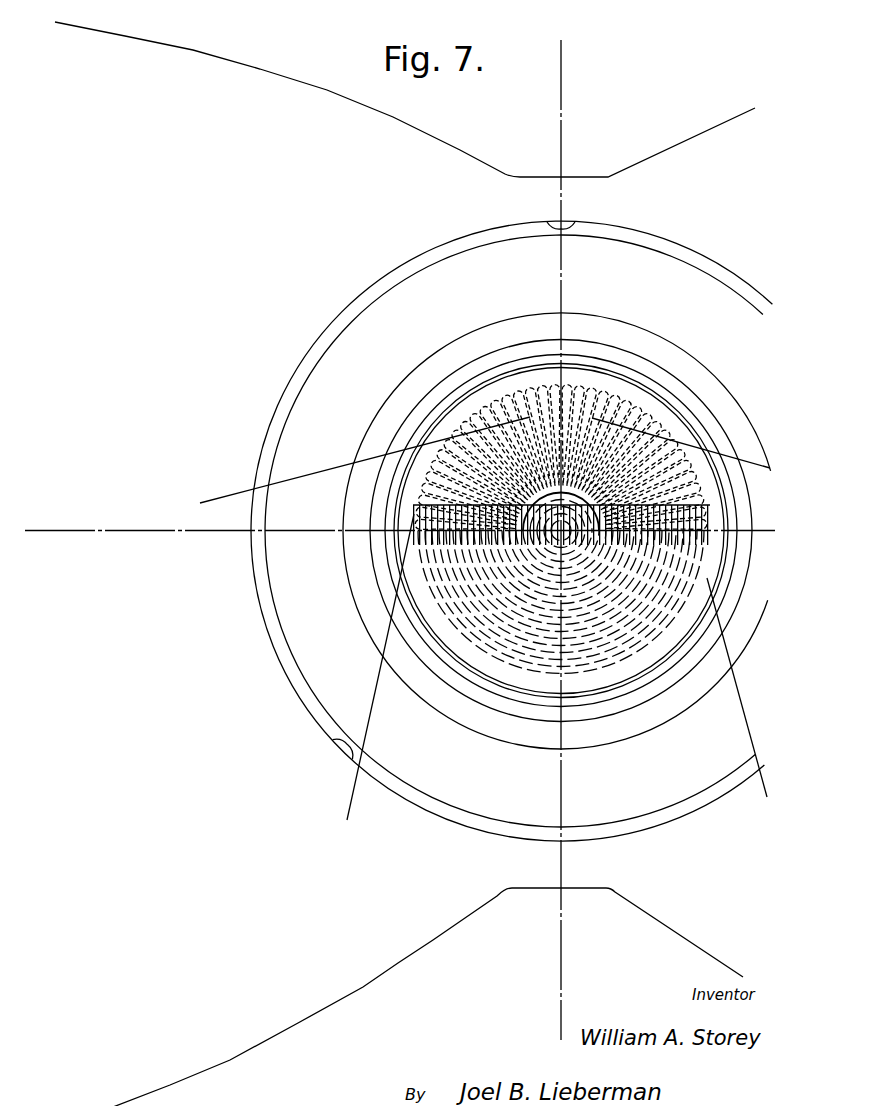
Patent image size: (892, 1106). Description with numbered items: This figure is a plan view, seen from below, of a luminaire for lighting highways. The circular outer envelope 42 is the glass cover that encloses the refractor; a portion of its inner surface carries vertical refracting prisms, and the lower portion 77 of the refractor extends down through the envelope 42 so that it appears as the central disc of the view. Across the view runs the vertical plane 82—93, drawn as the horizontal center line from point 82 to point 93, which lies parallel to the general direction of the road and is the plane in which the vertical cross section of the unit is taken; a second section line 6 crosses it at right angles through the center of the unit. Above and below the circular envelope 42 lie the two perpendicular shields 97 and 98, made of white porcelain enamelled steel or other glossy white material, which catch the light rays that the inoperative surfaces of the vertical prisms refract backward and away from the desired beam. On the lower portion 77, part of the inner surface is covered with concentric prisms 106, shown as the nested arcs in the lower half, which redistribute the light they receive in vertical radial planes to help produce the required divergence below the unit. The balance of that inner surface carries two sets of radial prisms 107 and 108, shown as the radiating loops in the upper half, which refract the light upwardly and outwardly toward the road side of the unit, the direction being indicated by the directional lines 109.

The section line 6- 6 is at (566, 530).
The outer envelope 42 is at (303, 680).
The lower portion 77 is at (470, 657).
The vertical plane end point 82 is at (293, 518).
The vertical plane end point 93 is at (670, 520).
The shield 97 is at (699, 134).
The shield 98 is at (363, 987).
The concentric prisms 106 is at (632, 570).
The radial prisms 107 is at (520, 418).
The radial prisms 108 is at (618, 413).
The directional lines 109 is at (740, 712).